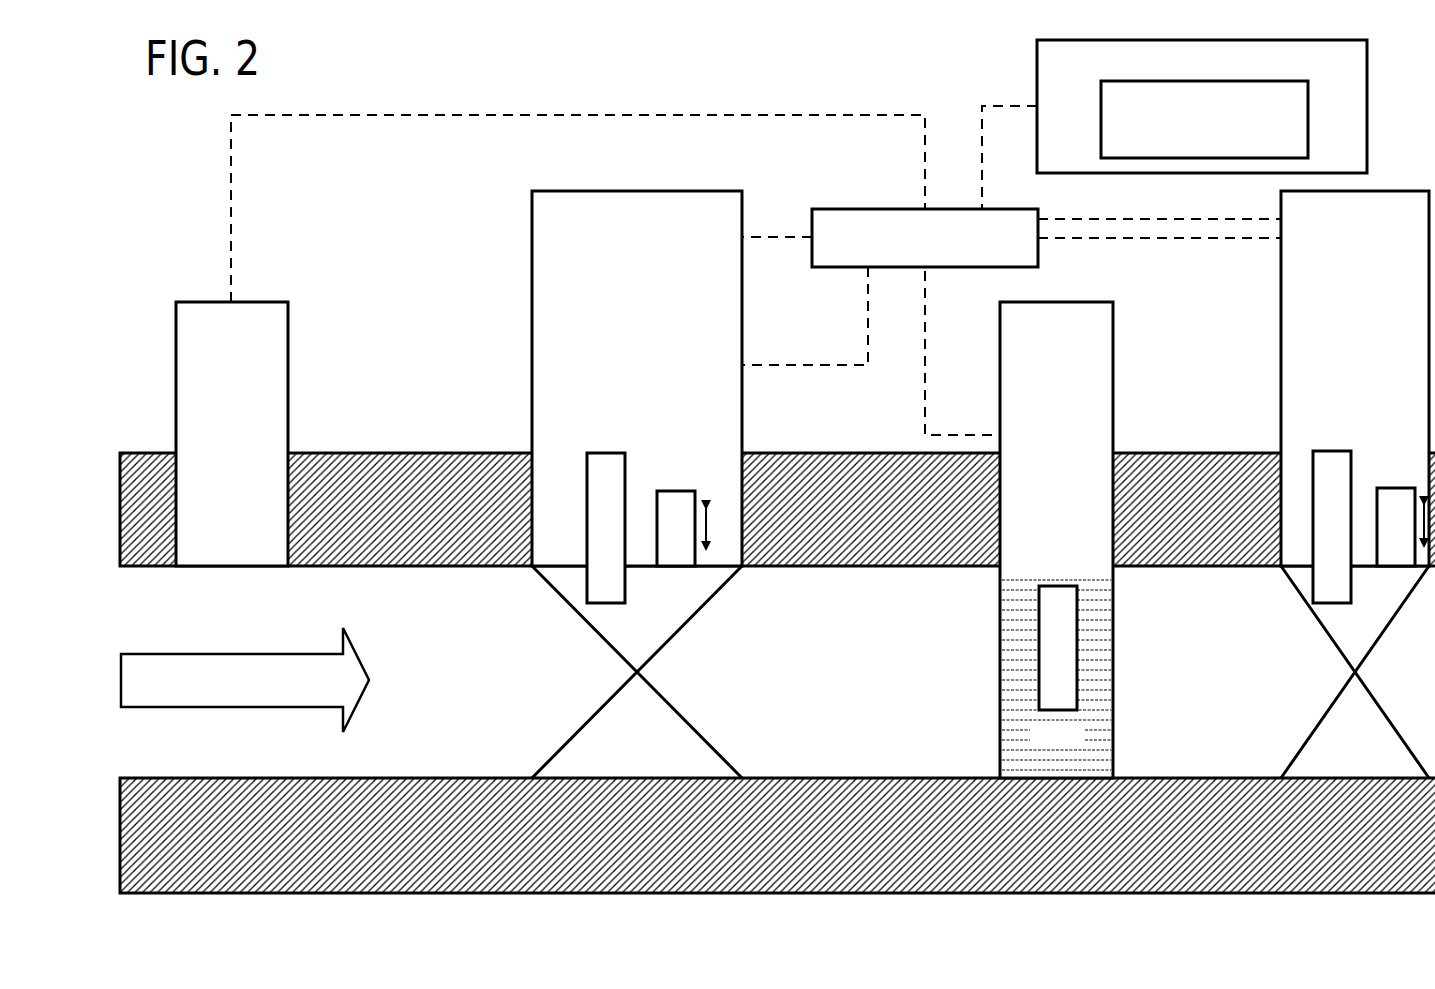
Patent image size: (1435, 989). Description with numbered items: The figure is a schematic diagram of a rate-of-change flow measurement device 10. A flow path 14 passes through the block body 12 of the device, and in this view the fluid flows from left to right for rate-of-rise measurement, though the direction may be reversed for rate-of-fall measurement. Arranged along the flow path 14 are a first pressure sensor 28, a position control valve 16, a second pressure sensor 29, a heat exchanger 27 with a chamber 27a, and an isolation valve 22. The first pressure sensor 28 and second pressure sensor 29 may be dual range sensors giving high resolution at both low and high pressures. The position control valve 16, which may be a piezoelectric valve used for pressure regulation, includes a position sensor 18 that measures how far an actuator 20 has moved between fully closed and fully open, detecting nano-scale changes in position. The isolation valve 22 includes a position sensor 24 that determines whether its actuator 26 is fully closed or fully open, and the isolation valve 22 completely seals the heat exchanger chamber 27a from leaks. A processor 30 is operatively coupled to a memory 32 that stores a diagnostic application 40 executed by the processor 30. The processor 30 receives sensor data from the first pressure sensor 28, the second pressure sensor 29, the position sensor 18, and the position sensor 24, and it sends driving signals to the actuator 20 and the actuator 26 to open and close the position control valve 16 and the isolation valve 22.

The rate-of-change flow measurement device 10 is at (170, 266).
The block body 12 is at (773, 893).
The flow path 14 is at (257, 693).
The position control valve 16 is at (602, 640).
The position sensor 18 is at (618, 504).
The actuator 20 is at (688, 541).
The isolation valve 22 is at (1332, 643).
The position sensor 24 is at (1344, 502).
The actuator 26 is at (1408, 540).
The heat exchanger 27 is at (1068, 748).
The chamber 27a is at (1076, 656).
The first pressure sensor 28 is at (243, 448).
The second pressure sensor 29 is at (1068, 449).
The processor 30 is at (1005, 251).
The memory 32 is at (1262, 76).
The diagnostic application 40 is at (1287, 147).